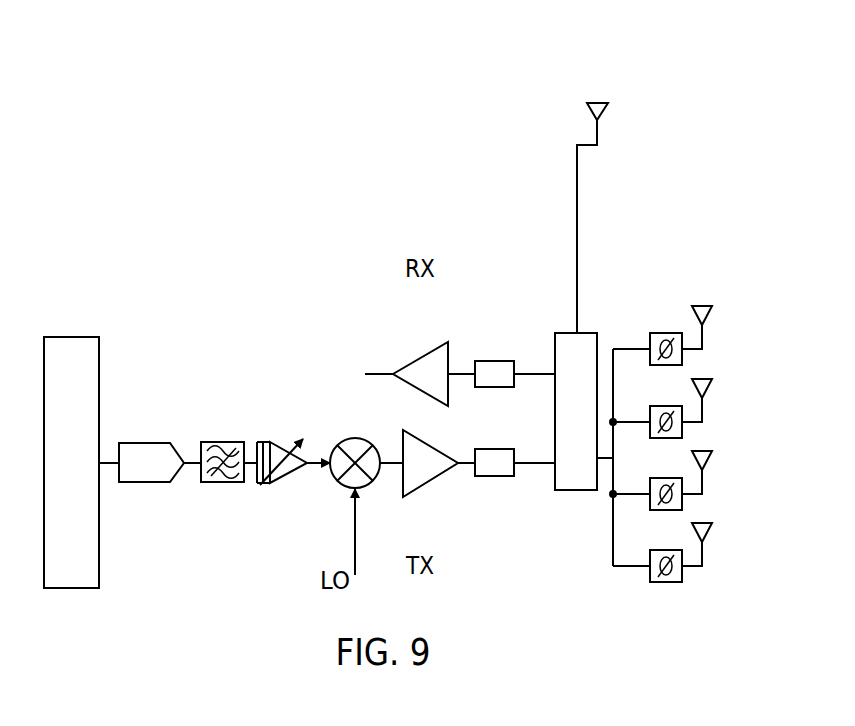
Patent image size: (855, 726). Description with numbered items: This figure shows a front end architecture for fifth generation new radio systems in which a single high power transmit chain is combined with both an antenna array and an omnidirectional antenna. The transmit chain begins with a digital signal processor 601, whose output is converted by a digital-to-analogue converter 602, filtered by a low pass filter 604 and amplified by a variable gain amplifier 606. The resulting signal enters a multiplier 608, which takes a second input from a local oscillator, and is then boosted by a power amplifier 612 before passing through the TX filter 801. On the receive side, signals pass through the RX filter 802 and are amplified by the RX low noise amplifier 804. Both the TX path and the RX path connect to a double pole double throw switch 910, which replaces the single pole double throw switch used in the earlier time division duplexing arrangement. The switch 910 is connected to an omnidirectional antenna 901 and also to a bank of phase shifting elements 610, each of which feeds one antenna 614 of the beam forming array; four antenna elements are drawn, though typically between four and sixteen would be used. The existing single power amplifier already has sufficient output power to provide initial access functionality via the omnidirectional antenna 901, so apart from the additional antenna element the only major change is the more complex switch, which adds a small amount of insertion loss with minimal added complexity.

The digital signal processor 601 is at (65, 575).
The digital-to-analogue converter 602 is at (147, 483).
The low pass filter 604 is at (223, 483).
The variable gain amplifier 606 is at (282, 448).
The multiplier 608 is at (357, 437).
The power amplifier 612 is at (420, 488).
The TX filter 801 is at (495, 478).
The RX filter 802 is at (495, 360).
The RX low noise amplifier 804 is at (422, 357).
The double pole double throw switch 910 is at (592, 333).
The omnidirectional antenna 901 is at (600, 103).
The phase shifting element 610 is at (675, 580).
The antenna 614 is at (707, 457).